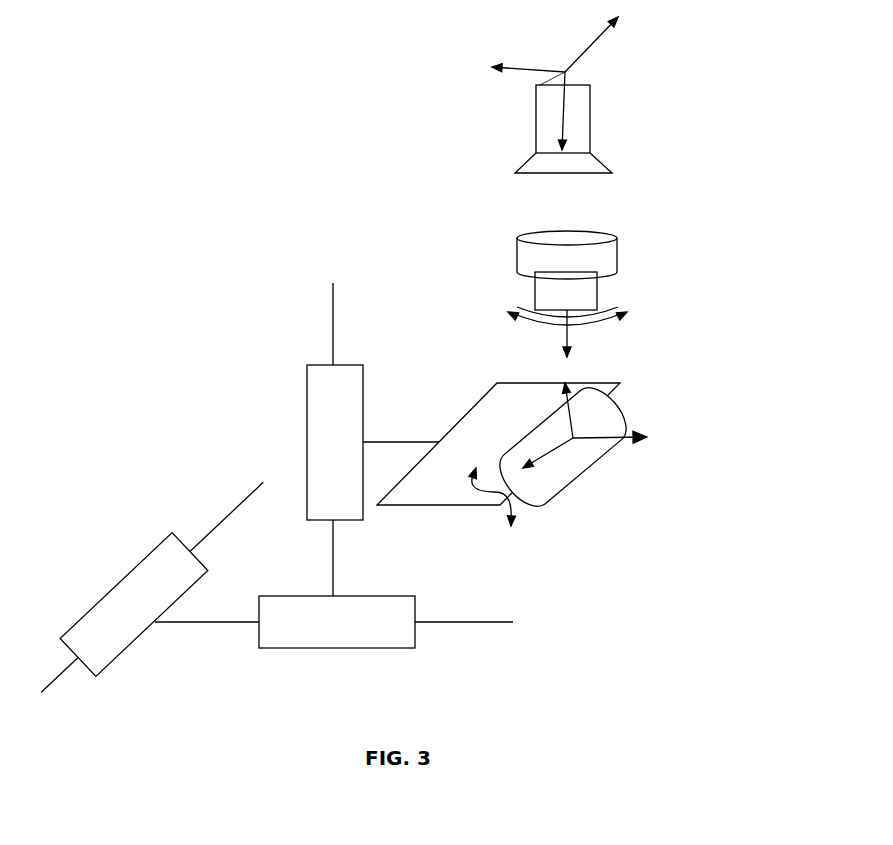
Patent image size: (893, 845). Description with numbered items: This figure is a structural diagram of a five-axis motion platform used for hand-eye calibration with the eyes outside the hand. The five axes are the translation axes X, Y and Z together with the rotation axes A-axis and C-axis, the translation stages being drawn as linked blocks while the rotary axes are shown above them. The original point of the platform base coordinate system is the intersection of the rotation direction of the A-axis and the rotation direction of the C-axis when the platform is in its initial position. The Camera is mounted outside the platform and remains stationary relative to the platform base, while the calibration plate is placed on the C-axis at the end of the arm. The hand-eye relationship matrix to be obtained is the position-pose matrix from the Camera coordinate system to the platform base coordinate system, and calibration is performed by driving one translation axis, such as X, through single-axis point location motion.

The camera Camera is at (503, 95).
The element C-axis is at (620, 294).
The element A-axis is at (562, 452).
The X-axis X is at (152, 587).
The Y-axis Y is at (334, 622).
The Z-axis Z is at (373, 439).